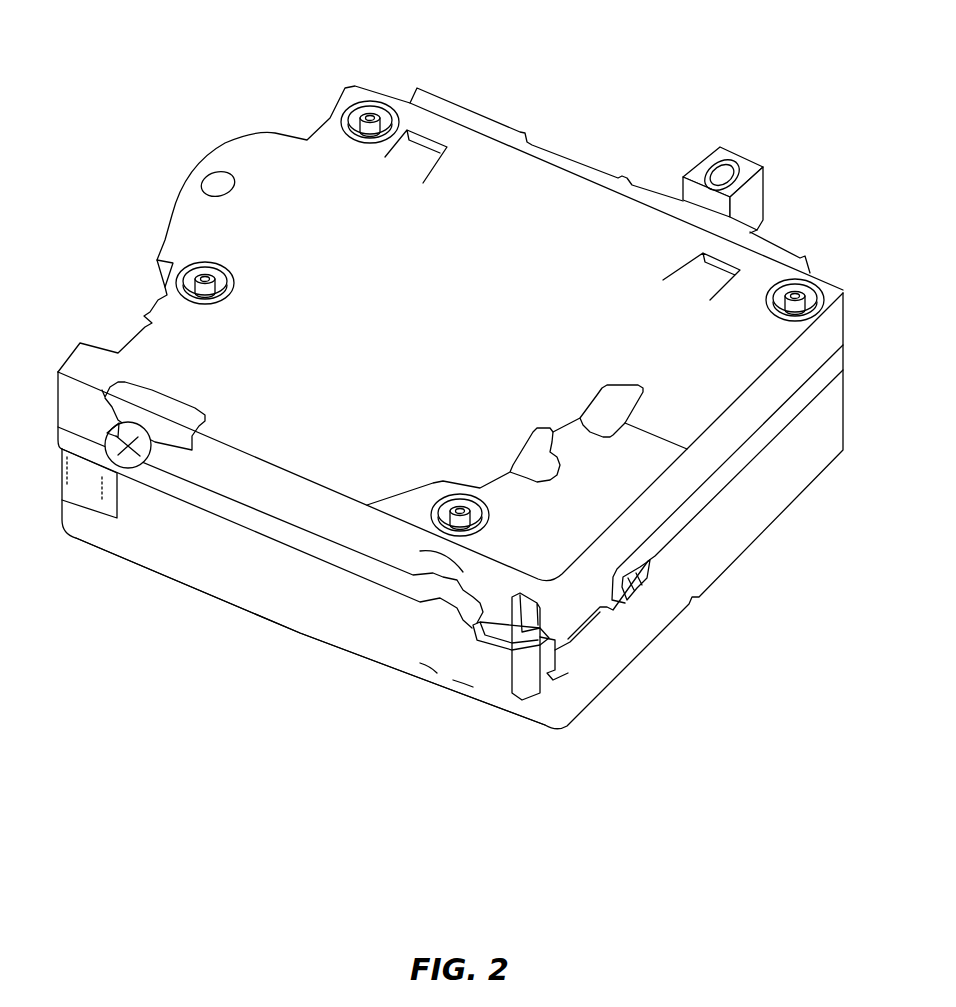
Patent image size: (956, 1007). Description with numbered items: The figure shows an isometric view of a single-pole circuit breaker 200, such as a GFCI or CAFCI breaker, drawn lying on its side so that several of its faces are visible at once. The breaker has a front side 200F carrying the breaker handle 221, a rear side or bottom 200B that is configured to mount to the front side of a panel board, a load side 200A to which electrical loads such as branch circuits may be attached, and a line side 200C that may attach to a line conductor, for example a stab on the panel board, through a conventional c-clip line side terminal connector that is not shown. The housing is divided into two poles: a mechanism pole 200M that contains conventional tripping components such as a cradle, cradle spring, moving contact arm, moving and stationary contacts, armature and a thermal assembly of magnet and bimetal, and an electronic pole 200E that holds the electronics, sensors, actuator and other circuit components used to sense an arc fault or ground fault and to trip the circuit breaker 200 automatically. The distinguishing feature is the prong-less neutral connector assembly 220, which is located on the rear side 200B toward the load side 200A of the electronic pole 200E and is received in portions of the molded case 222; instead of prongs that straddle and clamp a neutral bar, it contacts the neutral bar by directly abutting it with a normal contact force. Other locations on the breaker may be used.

The circuit breaker 200 is at (192, 84).
The load side 200A is at (153, 212).
The rear side 200B is at (298, 653).
The line side 200C is at (671, 669).
The electronic pole 200E is at (196, 568).
The front side 200F is at (596, 150).
The mechanism pole 200M is at (485, 150).
The neutral connector assembly 220 is at (51, 509).
The breaker handle 221 is at (744, 153).
The molded case 222 is at (439, 695).